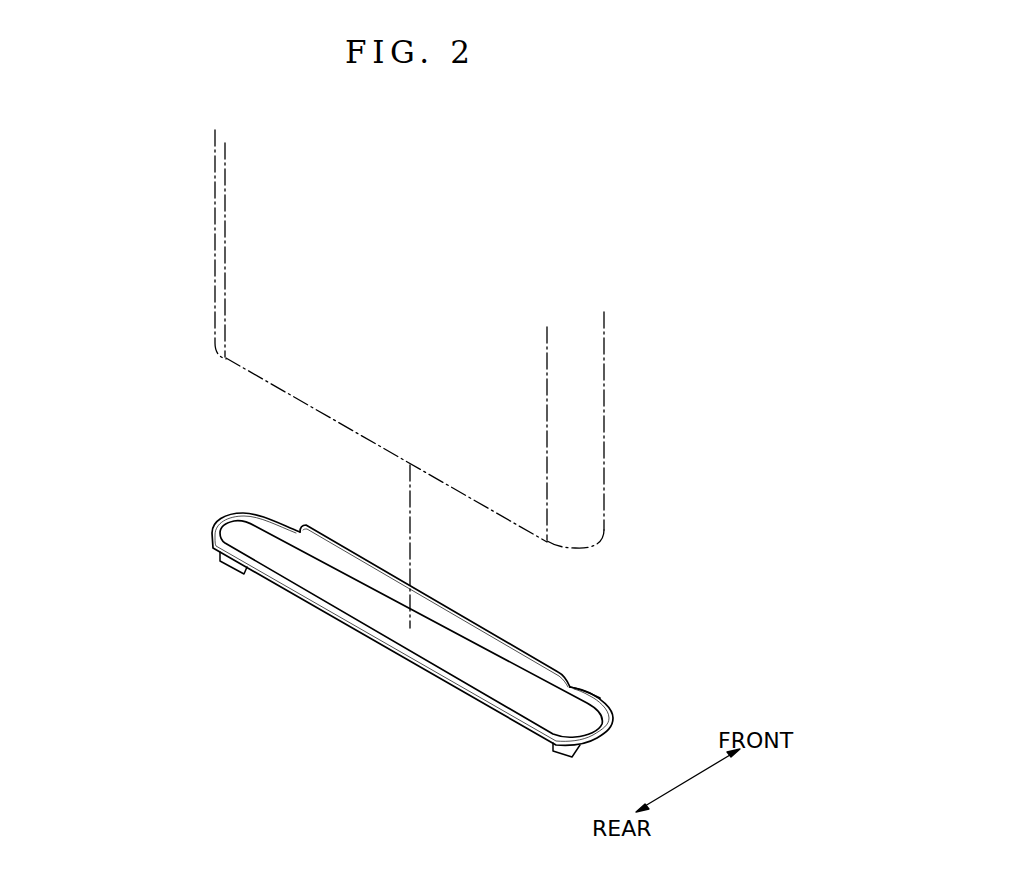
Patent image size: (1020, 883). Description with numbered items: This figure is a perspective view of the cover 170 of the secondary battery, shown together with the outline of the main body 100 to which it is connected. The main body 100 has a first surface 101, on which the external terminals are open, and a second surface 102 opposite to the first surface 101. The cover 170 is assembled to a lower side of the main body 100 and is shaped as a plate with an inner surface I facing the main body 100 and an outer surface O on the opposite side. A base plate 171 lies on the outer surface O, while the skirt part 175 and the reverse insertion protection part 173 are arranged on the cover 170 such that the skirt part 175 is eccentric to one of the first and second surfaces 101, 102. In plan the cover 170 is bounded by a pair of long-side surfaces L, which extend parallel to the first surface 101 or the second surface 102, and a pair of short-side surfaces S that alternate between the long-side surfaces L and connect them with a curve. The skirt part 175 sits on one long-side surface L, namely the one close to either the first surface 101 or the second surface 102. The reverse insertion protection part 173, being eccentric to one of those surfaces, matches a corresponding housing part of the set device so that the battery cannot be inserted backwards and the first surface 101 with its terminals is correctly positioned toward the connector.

The main body 100 is at (583, 473).
The first surface 101 is at (604, 387).
The second surface 102 is at (547, 403).
The cover 170 is at (362, 650).
The base plate 171 is at (581, 722).
The reverse insertion protection part 173 is at (538, 757).
The skirt part 175 is at (518, 641).
The short-side surface S is at (214, 524).
The long-side surface L is at (313, 605).
The outer surface O is at (384, 650).
The inner surface I is at (420, 632).